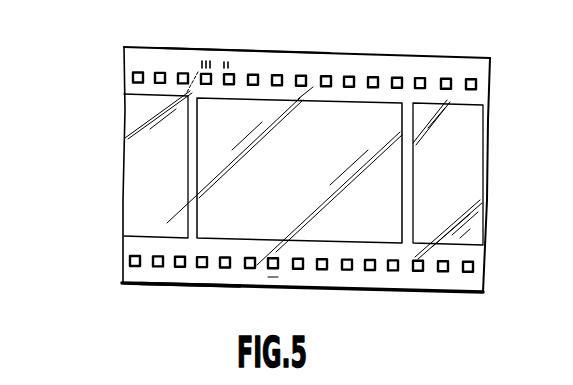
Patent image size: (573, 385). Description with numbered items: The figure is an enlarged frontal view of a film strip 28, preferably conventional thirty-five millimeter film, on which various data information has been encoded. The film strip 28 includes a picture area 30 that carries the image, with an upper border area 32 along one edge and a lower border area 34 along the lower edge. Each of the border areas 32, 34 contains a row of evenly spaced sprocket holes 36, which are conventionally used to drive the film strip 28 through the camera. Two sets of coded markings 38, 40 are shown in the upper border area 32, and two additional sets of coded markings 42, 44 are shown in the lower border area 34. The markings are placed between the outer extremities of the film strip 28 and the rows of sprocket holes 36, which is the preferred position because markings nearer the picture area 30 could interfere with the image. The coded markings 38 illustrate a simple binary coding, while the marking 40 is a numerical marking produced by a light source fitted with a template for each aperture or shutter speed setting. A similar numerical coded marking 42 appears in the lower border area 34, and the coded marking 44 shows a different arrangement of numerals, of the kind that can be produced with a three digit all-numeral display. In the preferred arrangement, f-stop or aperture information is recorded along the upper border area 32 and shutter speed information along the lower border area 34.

The film strip 28 is at (112, 136).
The picture area 30 is at (306, 182).
The upper border area 32 is at (246, 58).
The lower border area 34 is at (174, 277).
The sprocket holes 36 is at (327, 88).
The coded markings 38 is at (208, 44).
The coded markings 40 is at (312, 46).
The coded markings 42 is at (237, 286).
The coded markings 44 is at (312, 292).